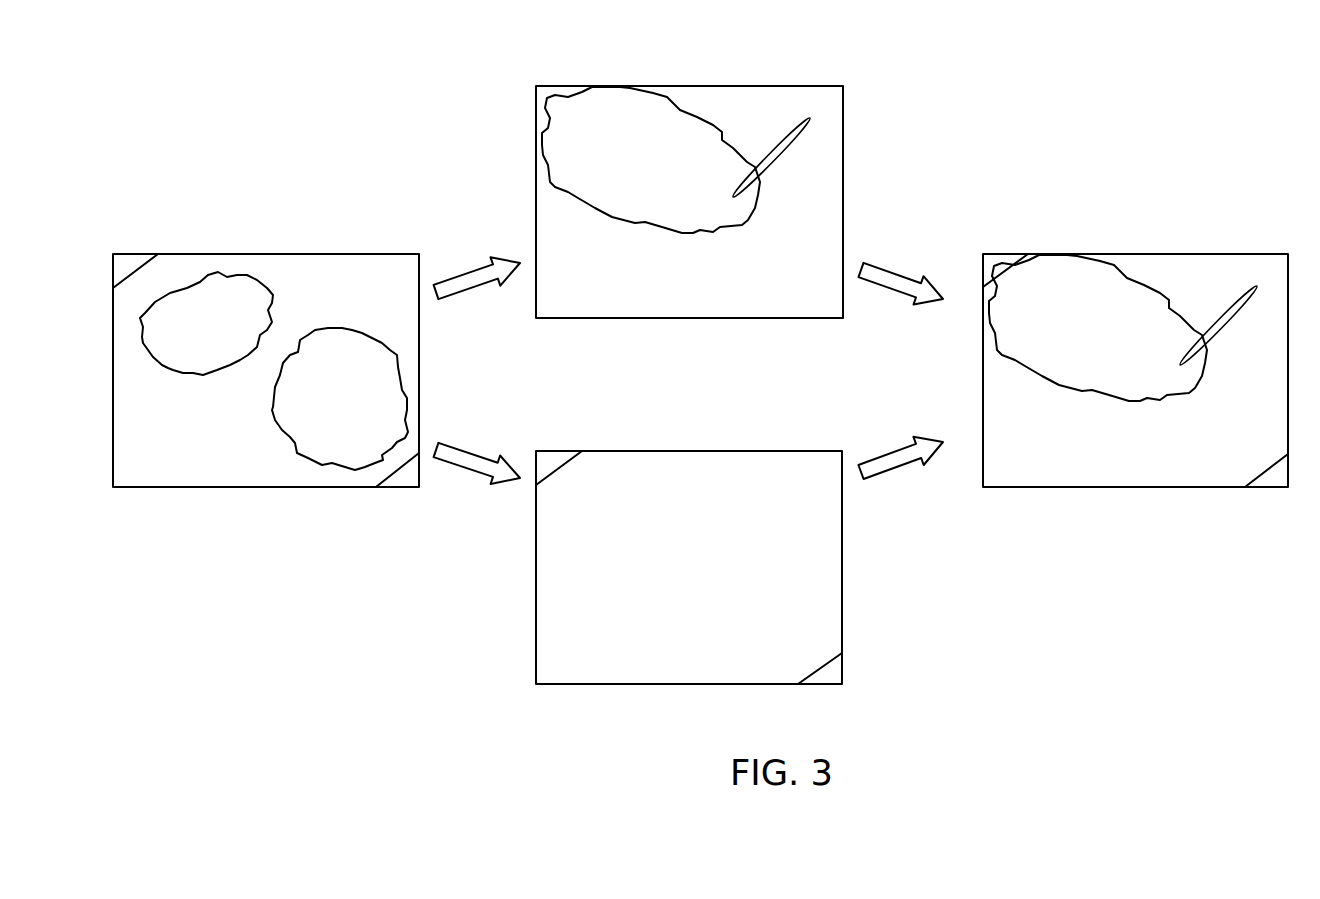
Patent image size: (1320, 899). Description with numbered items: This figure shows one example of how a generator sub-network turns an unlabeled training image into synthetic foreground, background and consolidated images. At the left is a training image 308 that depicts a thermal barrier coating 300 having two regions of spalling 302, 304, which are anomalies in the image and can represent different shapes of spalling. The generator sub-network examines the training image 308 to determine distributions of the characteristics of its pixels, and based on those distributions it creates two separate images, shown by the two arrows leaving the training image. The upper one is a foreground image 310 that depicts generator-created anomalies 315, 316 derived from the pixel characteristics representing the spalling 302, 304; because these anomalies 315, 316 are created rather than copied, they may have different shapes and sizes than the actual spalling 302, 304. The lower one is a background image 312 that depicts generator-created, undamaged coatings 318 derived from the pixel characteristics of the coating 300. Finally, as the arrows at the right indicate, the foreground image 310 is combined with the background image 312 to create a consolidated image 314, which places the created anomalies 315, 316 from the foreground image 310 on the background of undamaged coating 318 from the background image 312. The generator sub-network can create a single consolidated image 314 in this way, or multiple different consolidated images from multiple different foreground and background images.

The thermal barrier coating 300 is at (137, 270).
The spalling 302 is at (202, 362).
The spalling 304 is at (345, 340).
The training image 308 is at (265, 253).
The foreground image 310 is at (688, 85).
The background image 312 is at (688, 451).
The consolidated image 314 is at (1133, 254).
The generator-created anomaly 315 is at (610, 203).
The generator-created anomaly 316 is at (787, 150).
The undamaged coating 318 is at (560, 451).